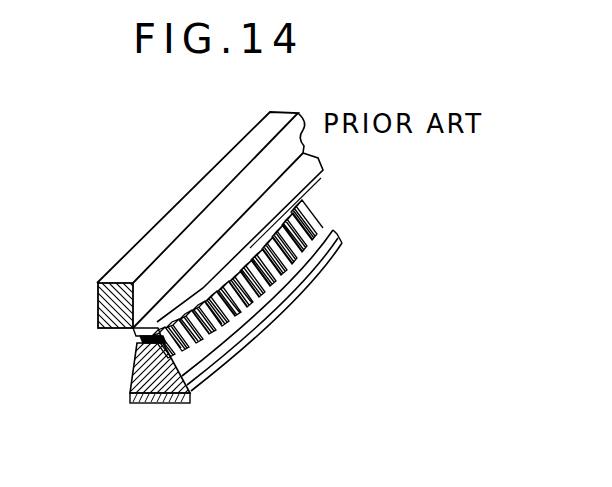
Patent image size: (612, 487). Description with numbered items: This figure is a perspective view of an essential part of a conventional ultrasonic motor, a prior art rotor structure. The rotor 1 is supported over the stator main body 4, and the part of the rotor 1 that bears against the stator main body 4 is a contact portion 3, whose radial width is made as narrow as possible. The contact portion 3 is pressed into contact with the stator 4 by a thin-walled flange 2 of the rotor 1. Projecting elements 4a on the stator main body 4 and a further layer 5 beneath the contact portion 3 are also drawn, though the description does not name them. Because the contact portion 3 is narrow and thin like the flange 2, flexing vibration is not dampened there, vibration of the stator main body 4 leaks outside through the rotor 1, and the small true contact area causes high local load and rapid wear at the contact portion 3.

The rotor 1 is at (97, 303).
The thin-walled flange 2 is at (137, 335).
The contact portion 3 is at (140, 343).
The stator main body 4 is at (187, 377).
The fins 4a is at (315, 237).
The bottom layer 5 is at (167, 402).